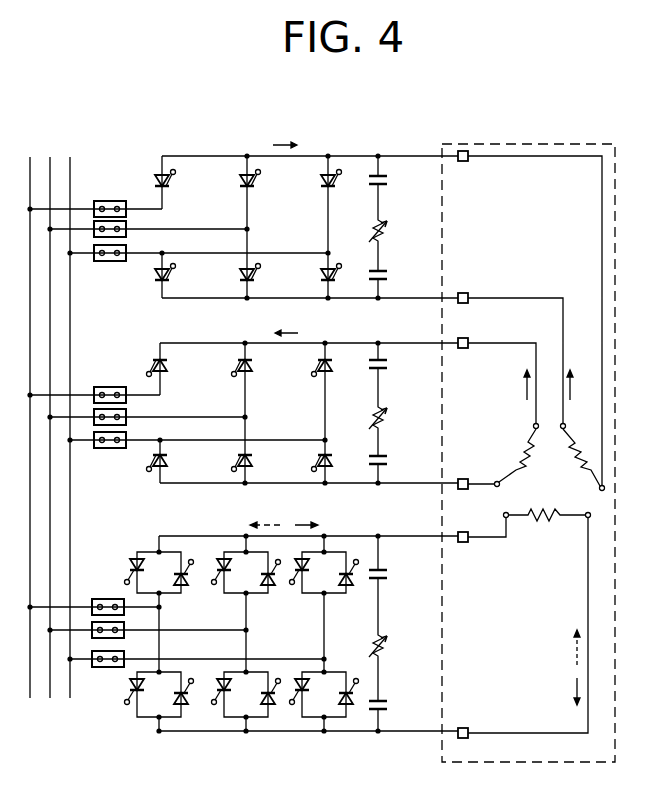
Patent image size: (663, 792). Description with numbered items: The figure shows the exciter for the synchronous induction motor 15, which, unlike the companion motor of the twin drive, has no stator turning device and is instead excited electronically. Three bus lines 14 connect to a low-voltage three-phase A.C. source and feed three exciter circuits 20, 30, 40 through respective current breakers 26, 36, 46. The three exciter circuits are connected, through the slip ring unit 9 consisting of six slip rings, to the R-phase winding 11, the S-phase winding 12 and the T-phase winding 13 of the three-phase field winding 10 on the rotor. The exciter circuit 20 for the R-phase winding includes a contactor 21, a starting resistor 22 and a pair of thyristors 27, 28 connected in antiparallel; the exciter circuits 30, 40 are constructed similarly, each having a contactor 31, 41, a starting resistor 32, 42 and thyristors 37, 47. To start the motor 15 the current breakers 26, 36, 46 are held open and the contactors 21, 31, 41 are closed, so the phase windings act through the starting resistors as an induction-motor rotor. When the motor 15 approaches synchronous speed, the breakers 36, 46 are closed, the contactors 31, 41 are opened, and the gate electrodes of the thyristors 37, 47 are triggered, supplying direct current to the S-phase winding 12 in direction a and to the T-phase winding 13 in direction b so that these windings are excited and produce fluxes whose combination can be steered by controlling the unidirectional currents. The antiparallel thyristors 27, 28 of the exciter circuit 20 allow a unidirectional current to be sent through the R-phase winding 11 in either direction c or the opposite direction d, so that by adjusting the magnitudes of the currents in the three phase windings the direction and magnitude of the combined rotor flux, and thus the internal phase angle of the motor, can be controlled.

The slip ring unit 9 is at (463, 162).
The three-phase field winding 10 is at (549, 520).
The R-phase winding 11 is at (540, 522).
The S-phase winding 12 is at (520, 468).
The T-phase winding 13 is at (580, 468).
The bus lines 14 is at (70, 165).
The synchronous induction motor 15 is at (528, 424).
The exciter circuit 20 is at (245, 609).
The contactor 21 is at (388, 572).
The starting resistor 22 is at (385, 650).
The current breaker 26 is at (106, 668).
The thyristor 27 is at (132, 565).
The thyristor 28 is at (186, 584).
The exciter circuit 30 is at (245, 399).
The contactor 31 is at (388, 362).
The starting resistor 32 is at (385, 419).
The current breaker 36 is at (108, 449).
The thyristor 37 is at (167, 360).
The exciter circuit 40 is at (245, 201).
The contactor 41 is at (388, 178).
The starting resistor 42 is at (385, 232).
The current breaker 46 is at (106, 262).
The thyristor 47 is at (170, 186).